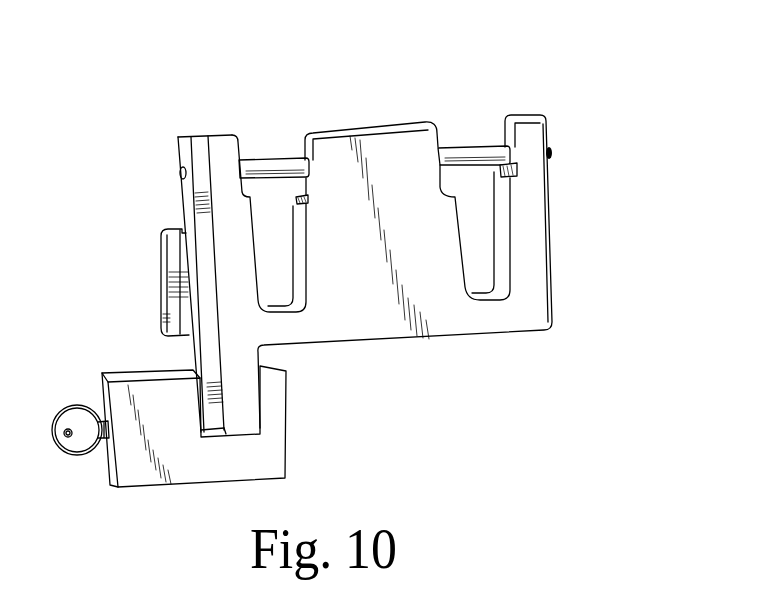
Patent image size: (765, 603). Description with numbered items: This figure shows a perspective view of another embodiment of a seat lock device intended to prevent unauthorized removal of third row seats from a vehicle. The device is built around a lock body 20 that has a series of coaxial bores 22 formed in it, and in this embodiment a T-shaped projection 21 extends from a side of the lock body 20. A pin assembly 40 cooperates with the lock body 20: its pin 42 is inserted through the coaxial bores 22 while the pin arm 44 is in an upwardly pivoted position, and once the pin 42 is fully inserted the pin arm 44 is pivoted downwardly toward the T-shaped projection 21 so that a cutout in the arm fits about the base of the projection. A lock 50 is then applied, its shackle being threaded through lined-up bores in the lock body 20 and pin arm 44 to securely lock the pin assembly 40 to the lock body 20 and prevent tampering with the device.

The lock body 20 is at (542, 287).
The T-shaped projection 21 is at (170, 252).
The coaxial bores 22 is at (303, 158).
The pin assembly 40 is at (176, 246).
The pin 42 is at (258, 158).
The pin arm 44 is at (200, 225).
The lock 50 is at (190, 470).